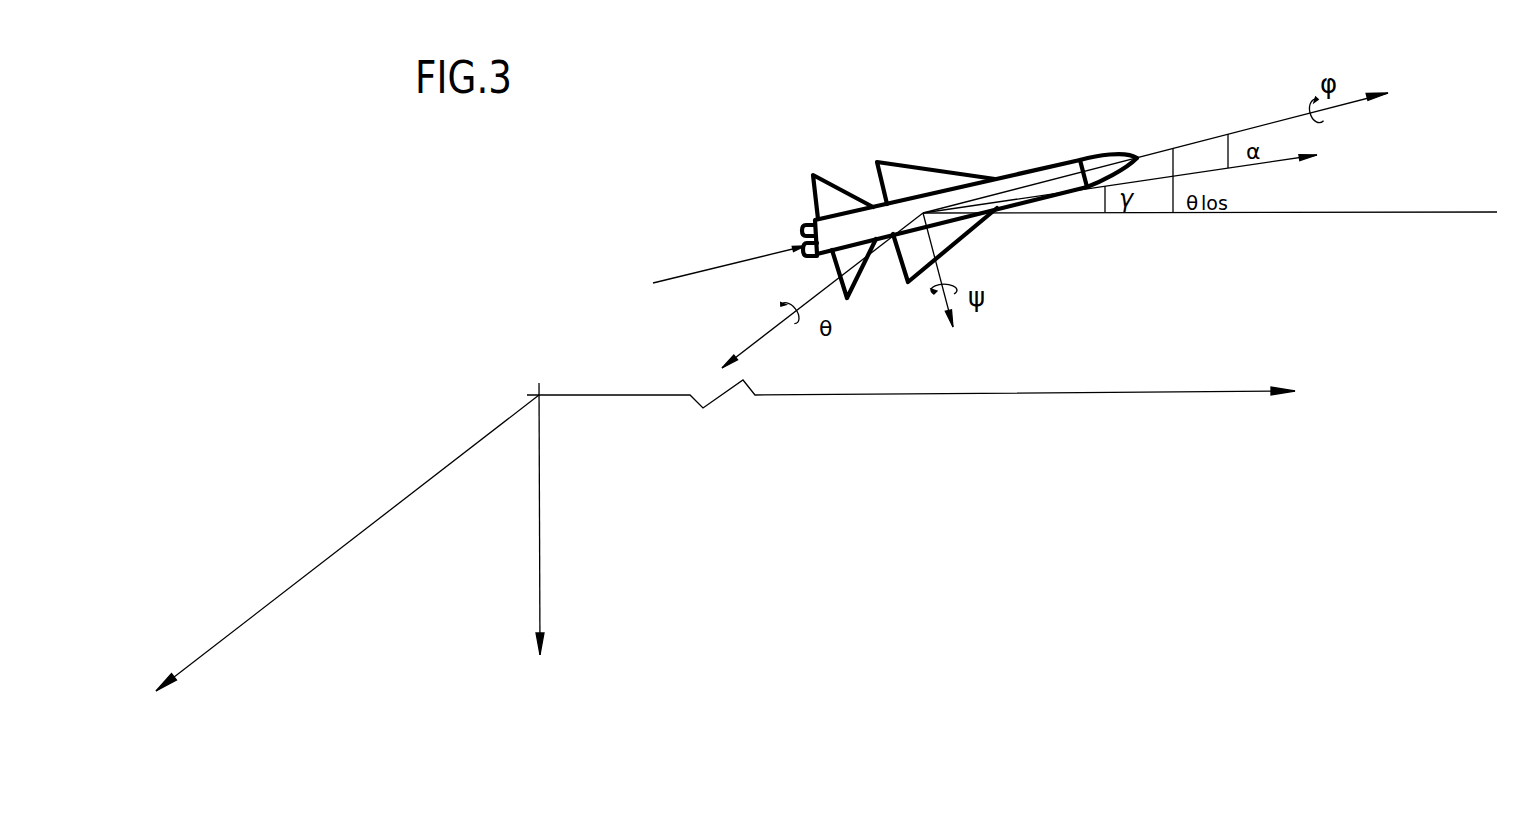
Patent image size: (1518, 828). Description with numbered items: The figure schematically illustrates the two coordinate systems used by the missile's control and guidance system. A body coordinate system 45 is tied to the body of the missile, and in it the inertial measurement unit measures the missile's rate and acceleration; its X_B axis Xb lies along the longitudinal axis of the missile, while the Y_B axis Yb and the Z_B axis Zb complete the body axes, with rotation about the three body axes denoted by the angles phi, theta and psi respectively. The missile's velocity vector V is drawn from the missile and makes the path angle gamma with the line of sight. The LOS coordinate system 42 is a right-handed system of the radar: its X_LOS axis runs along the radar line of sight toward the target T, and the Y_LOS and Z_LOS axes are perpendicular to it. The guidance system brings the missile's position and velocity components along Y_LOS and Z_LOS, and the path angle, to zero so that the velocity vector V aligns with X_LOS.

The body coordinate system 45 is at (1135, 157).
The LOS coordinate system 42 is at (555, 410).
The target T is at (721, 271).
The velocity vector V is at (1129, 179).
The X_B body axis Xb is at (1174, 147).
The Y_B body axis Yb is at (803, 292).
The Z_B body axis Zb is at (942, 287).